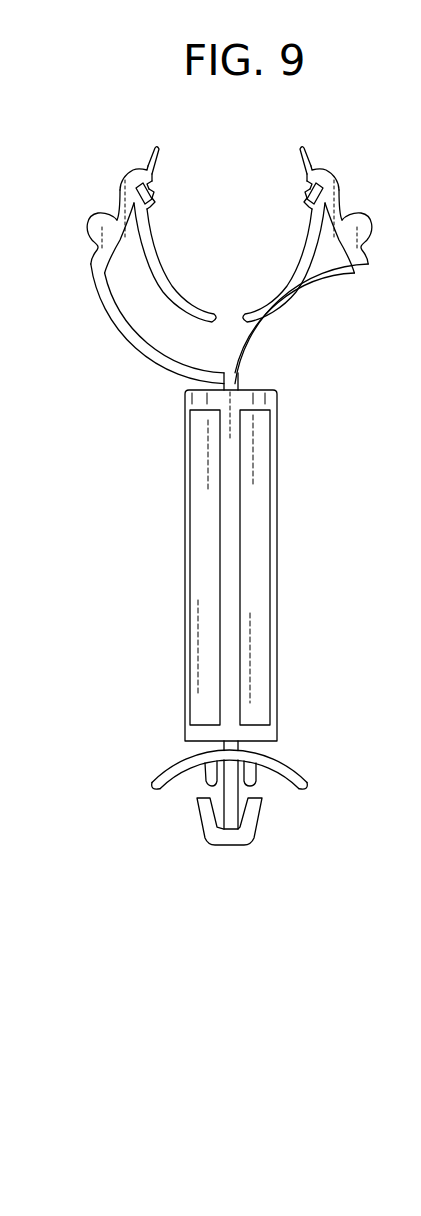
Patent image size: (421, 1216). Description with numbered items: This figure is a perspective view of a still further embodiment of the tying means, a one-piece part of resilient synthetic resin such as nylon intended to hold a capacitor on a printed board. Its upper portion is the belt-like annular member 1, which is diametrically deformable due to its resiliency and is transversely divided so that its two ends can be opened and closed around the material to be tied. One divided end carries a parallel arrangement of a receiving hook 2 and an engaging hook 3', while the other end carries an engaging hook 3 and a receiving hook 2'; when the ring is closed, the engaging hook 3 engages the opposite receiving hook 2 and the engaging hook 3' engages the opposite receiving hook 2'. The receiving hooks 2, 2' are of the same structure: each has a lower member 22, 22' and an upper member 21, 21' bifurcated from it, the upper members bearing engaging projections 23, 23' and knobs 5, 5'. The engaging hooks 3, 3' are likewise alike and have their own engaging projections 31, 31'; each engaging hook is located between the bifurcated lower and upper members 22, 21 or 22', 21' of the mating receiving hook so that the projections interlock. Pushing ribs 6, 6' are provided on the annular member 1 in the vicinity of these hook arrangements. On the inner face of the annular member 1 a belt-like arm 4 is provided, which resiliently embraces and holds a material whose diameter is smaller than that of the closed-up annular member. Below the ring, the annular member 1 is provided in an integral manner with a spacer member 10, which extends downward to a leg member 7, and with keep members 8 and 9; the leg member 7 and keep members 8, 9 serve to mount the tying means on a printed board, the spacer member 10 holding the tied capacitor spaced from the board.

The annular member 1 is at (131, 348).
The receiving hook 2 is at (118, 184).
The receiving hook 2' is at (343, 183).
The engaging hook 3 is at (293, 215).
The engaging hook 3' is at (170, 215).
The belt-like arm 4 is at (155, 281).
The knob 5 is at (147, 138).
The knob 5' is at (309, 136).
The pushing rib 6 is at (76, 238).
The pushing rib 6' is at (378, 238).
The leg member 7 is at (238, 745).
The keep member 8 is at (173, 770).
The keep member 9 is at (200, 810).
The spacer member 10 is at (202, 483).
The upper member 21 is at (86, 215).
The upper member 21' is at (372, 214).
The lower member 22 is at (175, 262).
The lower member 22' is at (284, 262).
The engaging projection 23 is at (177, 188).
The engaging projection 23' is at (277, 187).
The engaging projection 31 is at (281, 205).
The engaging projection 31' is at (181, 204).